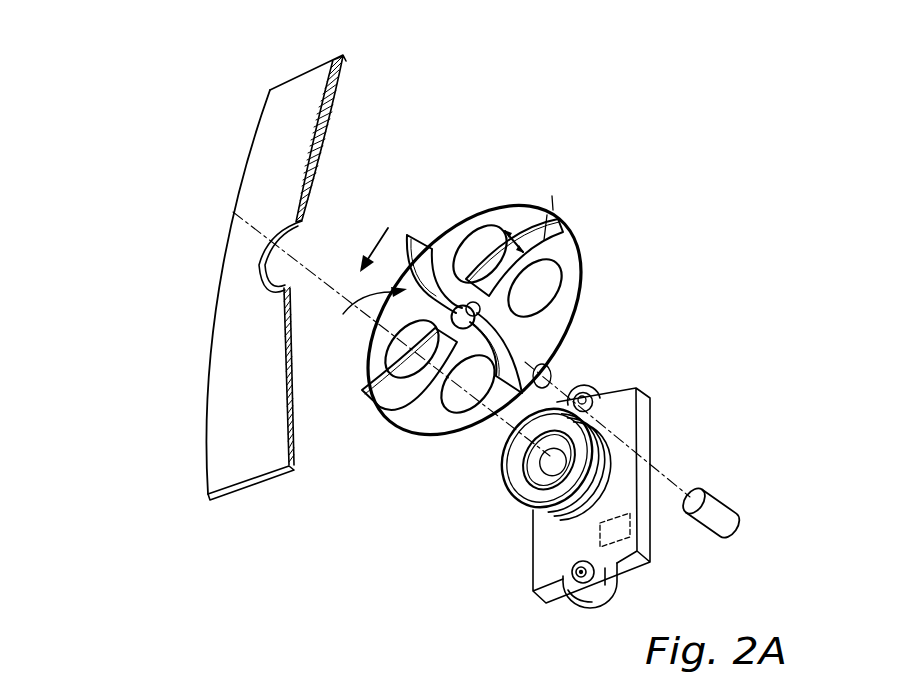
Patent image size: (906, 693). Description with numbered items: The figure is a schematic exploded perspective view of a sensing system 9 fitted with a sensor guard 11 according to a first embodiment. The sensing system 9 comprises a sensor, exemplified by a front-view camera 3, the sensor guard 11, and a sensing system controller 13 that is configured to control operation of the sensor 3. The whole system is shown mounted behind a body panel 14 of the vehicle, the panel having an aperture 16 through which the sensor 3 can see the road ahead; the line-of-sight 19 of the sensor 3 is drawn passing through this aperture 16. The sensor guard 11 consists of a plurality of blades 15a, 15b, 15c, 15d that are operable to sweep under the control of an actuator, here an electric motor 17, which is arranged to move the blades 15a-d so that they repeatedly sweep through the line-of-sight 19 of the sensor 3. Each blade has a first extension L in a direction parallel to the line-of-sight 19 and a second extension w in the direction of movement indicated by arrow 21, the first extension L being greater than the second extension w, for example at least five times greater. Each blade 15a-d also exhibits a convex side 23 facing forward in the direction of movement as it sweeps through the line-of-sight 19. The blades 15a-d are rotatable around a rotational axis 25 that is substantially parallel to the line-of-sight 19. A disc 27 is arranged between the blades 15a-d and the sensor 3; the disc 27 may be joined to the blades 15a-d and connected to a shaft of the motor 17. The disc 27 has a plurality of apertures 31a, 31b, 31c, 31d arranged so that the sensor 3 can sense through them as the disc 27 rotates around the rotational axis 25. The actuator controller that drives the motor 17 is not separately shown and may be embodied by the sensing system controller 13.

The body panel 14 is at (302, 92).
The aperture 16 is at (279, 273).
The line-of-sight 19 is at (327, 292).
The arrow 21 is at (372, 253).
The convex side 23 is at (359, 315).
The sensing system 9 is at (652, 252).
The disc 27 is at (550, 325).
The sensor guard 11 is at (594, 165).
The aperture 31a is at (473, 250).
The aperture 31b is at (398, 356).
The aperture 31c is at (456, 406).
The aperture 31d is at (557, 277).
The blade 15a is at (490, 270).
The blade 15b is at (424, 245).
The blade 15c is at (383, 395).
The blade 15d is at (503, 375).
The front-view camera 3 is at (662, 366).
The rotational axis 25 is at (557, 390).
The sensing system controller 13 is at (612, 533).
The electric motor 17 is at (720, 513).
The first extension L is at (514, 230).
The second extension w is at (556, 196).